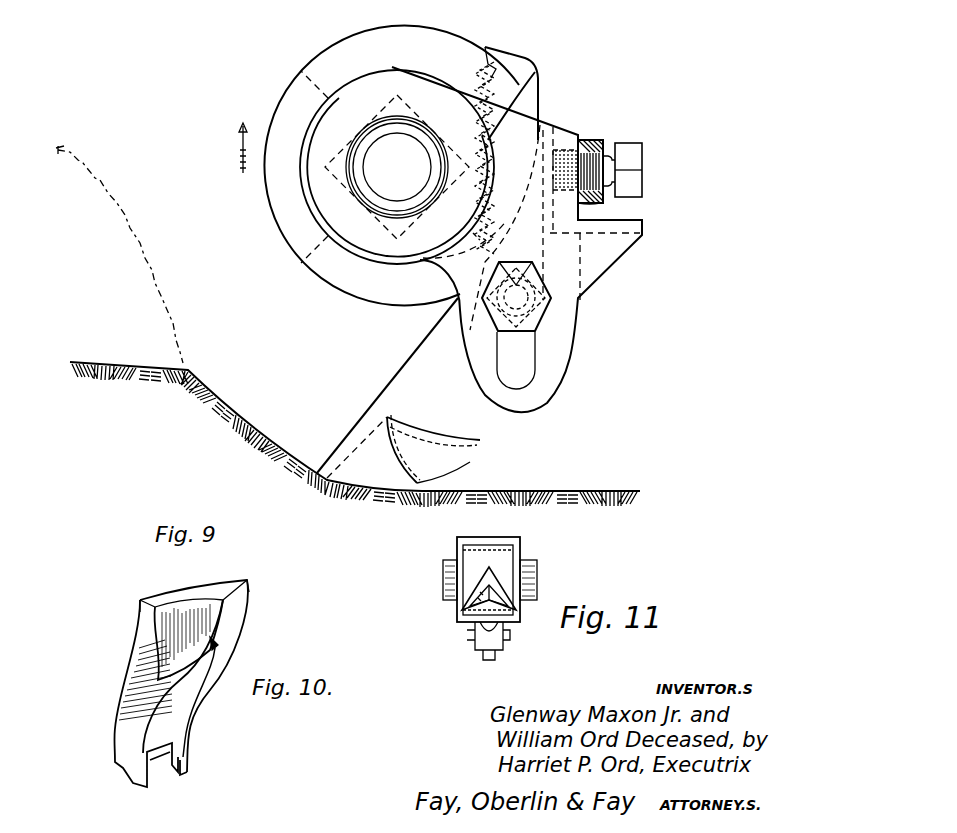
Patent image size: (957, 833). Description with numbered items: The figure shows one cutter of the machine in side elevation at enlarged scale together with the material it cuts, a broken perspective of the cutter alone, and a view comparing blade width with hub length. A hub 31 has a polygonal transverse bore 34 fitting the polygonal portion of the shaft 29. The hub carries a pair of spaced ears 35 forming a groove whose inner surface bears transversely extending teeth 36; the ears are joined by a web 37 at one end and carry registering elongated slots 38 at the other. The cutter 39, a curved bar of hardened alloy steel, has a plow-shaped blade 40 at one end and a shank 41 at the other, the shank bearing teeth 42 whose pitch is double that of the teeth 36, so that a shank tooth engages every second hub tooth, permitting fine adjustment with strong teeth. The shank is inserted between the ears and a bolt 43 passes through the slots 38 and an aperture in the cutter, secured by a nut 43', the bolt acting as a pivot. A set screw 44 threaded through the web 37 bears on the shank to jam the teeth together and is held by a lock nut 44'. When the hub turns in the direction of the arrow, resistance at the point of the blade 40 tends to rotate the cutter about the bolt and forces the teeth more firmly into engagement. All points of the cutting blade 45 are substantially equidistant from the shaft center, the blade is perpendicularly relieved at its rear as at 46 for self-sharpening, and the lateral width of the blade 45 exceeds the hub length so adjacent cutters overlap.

In FIG. 9, the shaft 29 is at (397, 167).
In FIG. 9, the hub 31 is at (388, 45).
In FIG. 9, the polygonal transverse bore 34 is at (340, 173).
In FIG. 9, the spaced ears 35 is at (562, 343).
In FIG. 9, the teeth 36 is at (533, 127).
In FIG. 9, the web 37 is at (572, 142).
In FIG. 9, the elongated slots 38 is at (535, 357).
In FIG. 9, the cutter 39 is at (453, 362).
In FIG. 10, the cutter 39 is at (190, 748).
In FIG. 9, the plow-shaped blade 40 is at (318, 470).
In FIG. 10, the plow-shaped blade 40 is at (249, 617).
In FIG. 9, the shank 41 is at (527, 88).
In FIG. 9, the teeth 42 is at (485, 102).
In FIG. 9, the bolt 43 is at (551, 296).
In FIG. 9, the nut 43' is at (446, 279).
In FIG. 9, the set screw 44 is at (640, 164).
In FIG. 9, the lock nut 44' is at (634, 206).
In FIG. 9, the cutting blade 45 is at (340, 497).
In FIG. 10, the cutting blade 45 is at (197, 597).
In FIG. 9, the relief 46 is at (417, 482).
In FIG. 10, the relief 46 is at (138, 612).